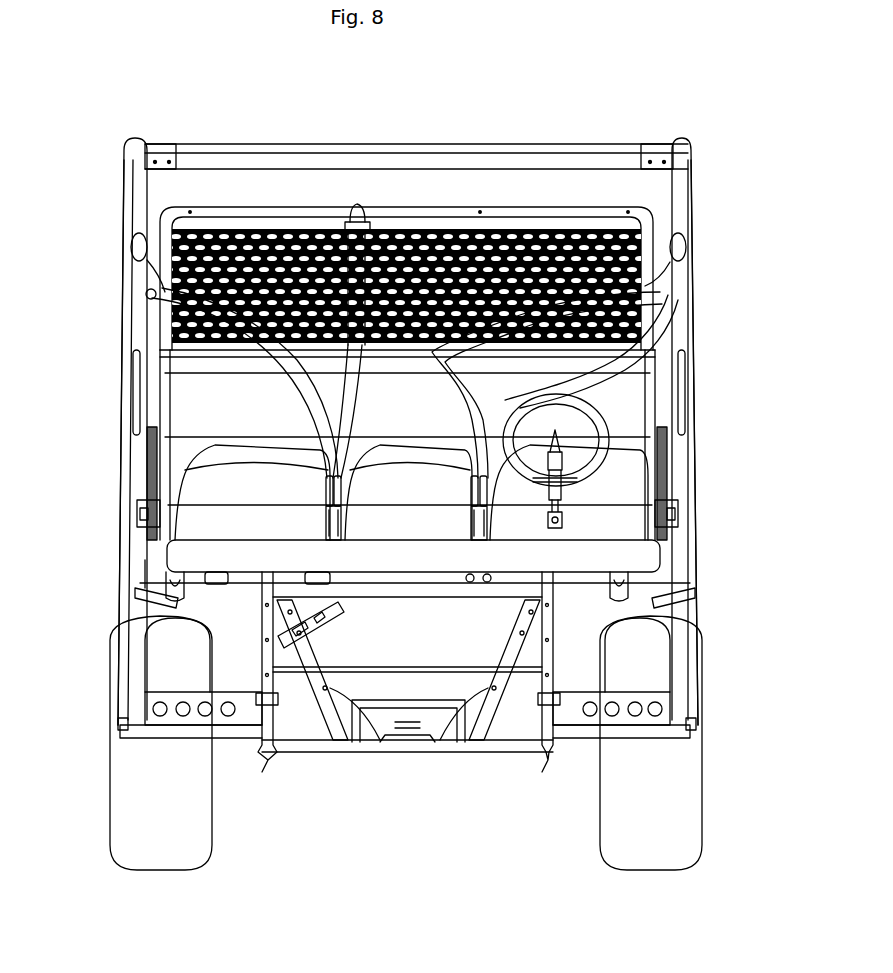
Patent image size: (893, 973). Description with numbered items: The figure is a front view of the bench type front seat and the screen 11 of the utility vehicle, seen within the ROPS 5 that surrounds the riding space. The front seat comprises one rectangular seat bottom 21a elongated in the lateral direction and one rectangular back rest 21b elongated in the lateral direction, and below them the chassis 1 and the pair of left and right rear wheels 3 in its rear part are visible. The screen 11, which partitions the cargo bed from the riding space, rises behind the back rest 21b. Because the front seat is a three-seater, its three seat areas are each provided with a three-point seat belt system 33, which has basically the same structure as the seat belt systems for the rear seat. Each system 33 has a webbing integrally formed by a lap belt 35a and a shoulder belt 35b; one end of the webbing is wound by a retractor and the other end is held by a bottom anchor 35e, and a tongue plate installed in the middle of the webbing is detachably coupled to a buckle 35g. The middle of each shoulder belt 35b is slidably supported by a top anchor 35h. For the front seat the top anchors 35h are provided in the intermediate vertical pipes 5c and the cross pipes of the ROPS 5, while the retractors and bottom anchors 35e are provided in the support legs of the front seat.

The chassis 1 is at (409, 752).
The rear wheels 3 is at (195, 825).
The ROPS 5 is at (191, 141).
The intermediate vertical pipes 5c is at (127, 298).
The screen 11 is at (258, 214).
The seat bottom 21a is at (180, 565).
The back rest 21b is at (166, 462).
The three-point seat belt systems 33 is at (170, 390).
The lap belt 35a is at (283, 451).
The shoulder belt 35b is at (297, 390).
The bottom anchor 35e is at (155, 600).
The buckle 35g is at (327, 492).
The top anchor 35h is at (127, 262).